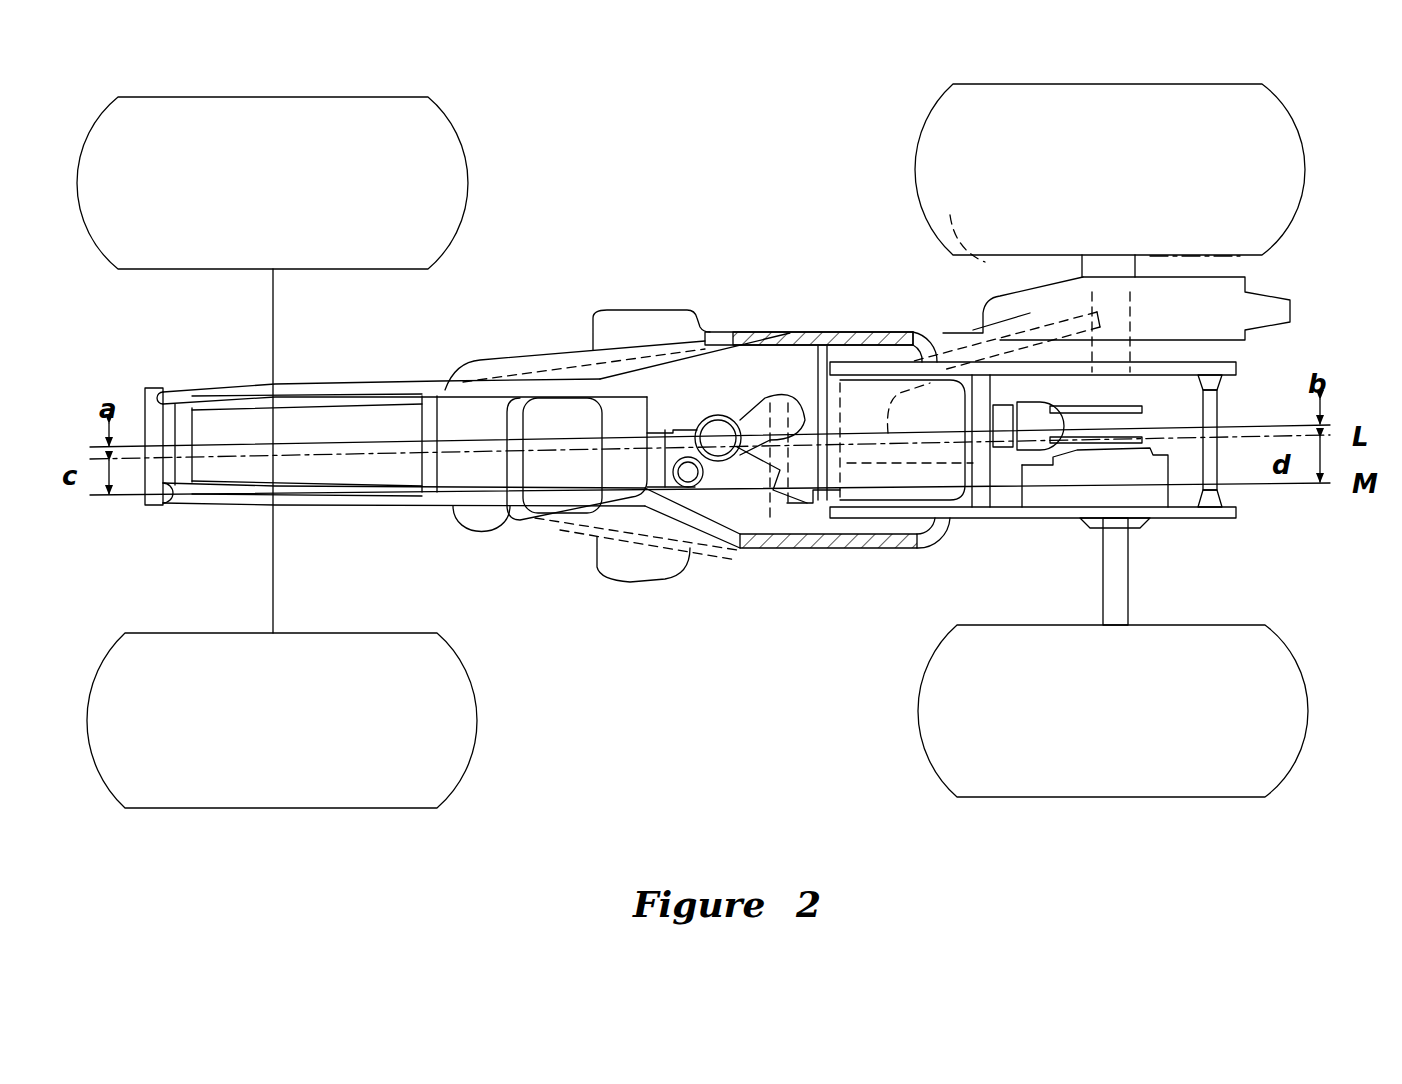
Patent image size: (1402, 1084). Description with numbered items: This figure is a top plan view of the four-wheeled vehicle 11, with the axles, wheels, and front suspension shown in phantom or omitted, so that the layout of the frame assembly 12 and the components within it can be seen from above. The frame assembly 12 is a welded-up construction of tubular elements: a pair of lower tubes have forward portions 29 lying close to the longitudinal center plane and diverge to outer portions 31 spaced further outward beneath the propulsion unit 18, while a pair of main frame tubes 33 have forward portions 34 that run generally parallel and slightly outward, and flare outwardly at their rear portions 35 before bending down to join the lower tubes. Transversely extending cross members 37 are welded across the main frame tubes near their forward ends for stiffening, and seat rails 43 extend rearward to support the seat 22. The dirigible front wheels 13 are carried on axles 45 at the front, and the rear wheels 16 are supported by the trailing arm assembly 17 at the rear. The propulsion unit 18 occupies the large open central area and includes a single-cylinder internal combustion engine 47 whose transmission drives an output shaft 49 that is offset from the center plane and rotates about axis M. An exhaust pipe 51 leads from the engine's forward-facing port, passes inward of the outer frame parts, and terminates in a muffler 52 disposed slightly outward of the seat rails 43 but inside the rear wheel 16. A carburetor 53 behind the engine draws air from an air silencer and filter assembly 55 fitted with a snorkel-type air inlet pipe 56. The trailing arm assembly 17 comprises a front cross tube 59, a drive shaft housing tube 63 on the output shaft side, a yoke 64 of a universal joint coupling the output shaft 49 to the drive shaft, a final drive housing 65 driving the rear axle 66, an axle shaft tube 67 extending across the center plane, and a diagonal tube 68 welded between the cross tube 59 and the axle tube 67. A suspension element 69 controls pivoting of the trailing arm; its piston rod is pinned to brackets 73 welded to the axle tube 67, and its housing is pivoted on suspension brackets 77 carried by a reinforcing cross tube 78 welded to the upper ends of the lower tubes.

The four-wheeled vehicle 11 is at (617, 176).
The frame assembly 12 is at (330, 381).
The dirigible front wheels 13 is at (468, 172).
The rear wheels 16 is at (477, 748).
The trailing arm assembly 17 is at (938, 507).
The propulsion unit 18 is at (476, 537).
The seat 22 is at (1238, 518).
The forward portions of lower tubes 29 is at (290, 400).
The outer portions of lower tubes 31 is at (716, 328).
The main frame tubes 33 is at (399, 381).
The forward portions of main frame tubes 34 is at (352, 382).
The flared rear portions of main frame tubes 35 is at (843, 330).
The cross members 37 is at (200, 437).
The seat rails 43 is at (1160, 360).
The front axles 45 is at (272, 607).
The internal combustion engine 47 is at (553, 534).
The output shaft 49 is at (808, 362).
The exhaust pipe 51 is at (478, 382).
The muffler 52 is at (1180, 270).
The carburetor 53 is at (690, 402).
The air silencer and filter assembly 55 is at (766, 330).
The air inlet pipe 56 is at (720, 402).
The front cross tube 59 is at (905, 320).
The drive shaft housing tube 63 is at (1000, 482).
The yoke of universal joint 64 is at (863, 378).
The final drive housing 65 is at (1158, 470).
The rear axle 66 is at (1130, 608).
The axle shaft tube 67 is at (1220, 390).
The diagonal tube 68 is at (968, 330).
The suspension element 69 is at (1045, 400).
The brackets 73 is at (1100, 452).
The suspension brackets 77 is at (1001, 400).
The reinforcing cross tube 78 is at (973, 402).